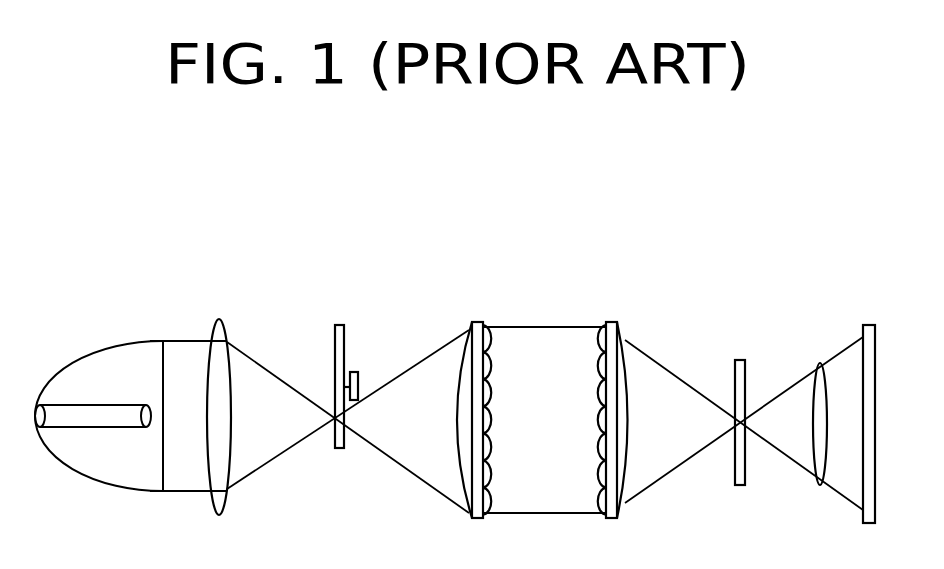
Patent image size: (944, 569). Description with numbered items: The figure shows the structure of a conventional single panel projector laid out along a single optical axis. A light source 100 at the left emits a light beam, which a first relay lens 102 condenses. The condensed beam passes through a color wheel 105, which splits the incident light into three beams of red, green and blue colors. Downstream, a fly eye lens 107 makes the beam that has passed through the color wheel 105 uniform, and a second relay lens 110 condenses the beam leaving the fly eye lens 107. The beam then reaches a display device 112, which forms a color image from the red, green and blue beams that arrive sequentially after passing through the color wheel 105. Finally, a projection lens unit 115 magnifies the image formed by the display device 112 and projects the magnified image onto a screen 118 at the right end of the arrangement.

The light source 100 is at (116, 340).
The first relay lens 102 is at (221, 317).
The color wheel 105 is at (341, 323).
The fly eye lens 107 is at (479, 320).
The second relay lens 110 is at (612, 320).
The display device 112 is at (741, 358).
The projection lens unit 115 is at (821, 362).
The screen 118 is at (870, 324).